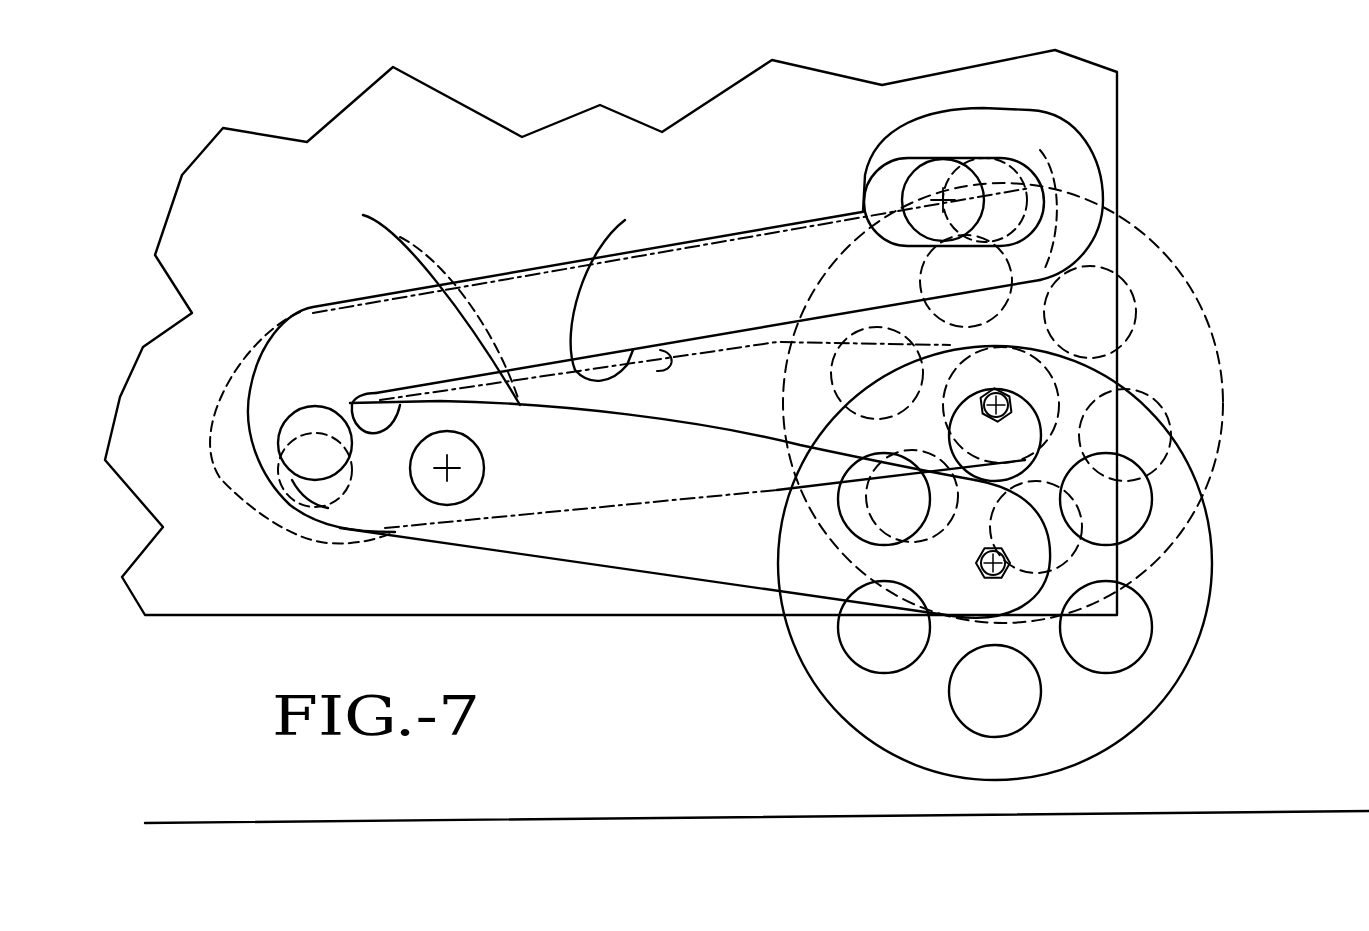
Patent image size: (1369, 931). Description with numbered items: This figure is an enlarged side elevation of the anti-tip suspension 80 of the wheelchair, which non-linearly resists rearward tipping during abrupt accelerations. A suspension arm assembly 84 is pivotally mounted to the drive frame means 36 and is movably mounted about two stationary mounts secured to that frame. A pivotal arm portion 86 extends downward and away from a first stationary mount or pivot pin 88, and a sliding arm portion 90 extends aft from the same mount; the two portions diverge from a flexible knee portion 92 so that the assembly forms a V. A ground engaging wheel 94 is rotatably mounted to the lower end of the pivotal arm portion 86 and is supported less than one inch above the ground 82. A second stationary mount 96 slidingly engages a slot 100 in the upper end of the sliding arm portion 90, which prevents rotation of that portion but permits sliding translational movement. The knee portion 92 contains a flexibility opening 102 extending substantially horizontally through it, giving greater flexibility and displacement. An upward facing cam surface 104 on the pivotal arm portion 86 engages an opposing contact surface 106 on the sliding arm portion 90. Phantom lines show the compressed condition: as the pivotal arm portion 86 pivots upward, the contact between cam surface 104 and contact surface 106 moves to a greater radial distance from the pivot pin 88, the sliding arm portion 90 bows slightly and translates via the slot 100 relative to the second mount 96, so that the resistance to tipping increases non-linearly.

The drive frame means 36 is at (1117, 92).
The anti-tip suspension 80 is at (1212, 185).
The ground 82 is at (656, 822).
The suspension arm assembly 84 is at (476, 262).
The pivotal arm portion 86 is at (645, 584).
The pivot pin 88 is at (483, 488).
The sliding arm portion 90 is at (680, 241).
The knee portion 92 is at (303, 308).
The ground engaging wheel 94 is at (1193, 297).
The second stationary mount 96 is at (933, 160).
The slot 100 is at (1050, 116).
The flexibility opening 102 is at (295, 408).
The cam surface 104 is at (472, 302).
The opposing contact surface 106 is at (640, 343).